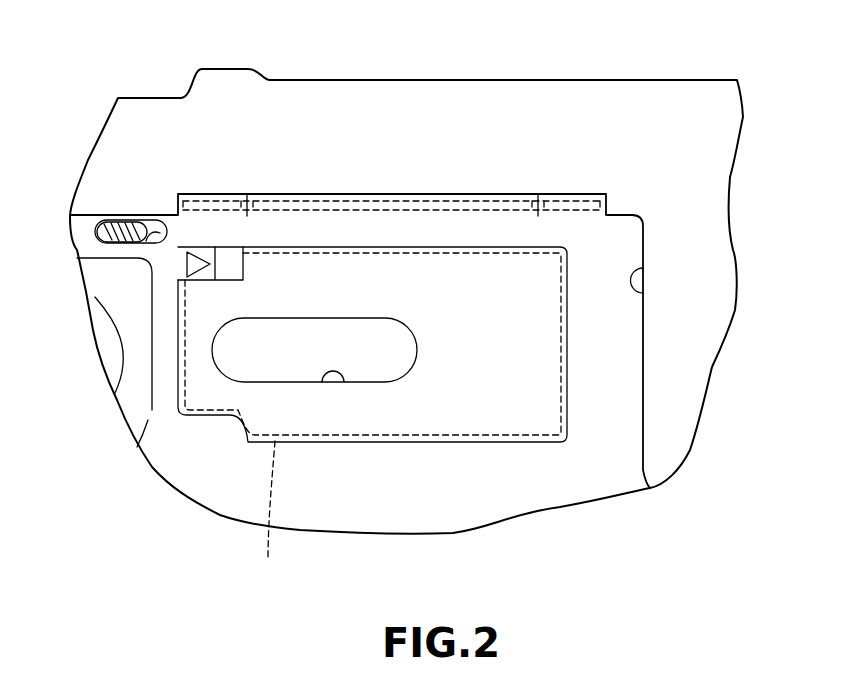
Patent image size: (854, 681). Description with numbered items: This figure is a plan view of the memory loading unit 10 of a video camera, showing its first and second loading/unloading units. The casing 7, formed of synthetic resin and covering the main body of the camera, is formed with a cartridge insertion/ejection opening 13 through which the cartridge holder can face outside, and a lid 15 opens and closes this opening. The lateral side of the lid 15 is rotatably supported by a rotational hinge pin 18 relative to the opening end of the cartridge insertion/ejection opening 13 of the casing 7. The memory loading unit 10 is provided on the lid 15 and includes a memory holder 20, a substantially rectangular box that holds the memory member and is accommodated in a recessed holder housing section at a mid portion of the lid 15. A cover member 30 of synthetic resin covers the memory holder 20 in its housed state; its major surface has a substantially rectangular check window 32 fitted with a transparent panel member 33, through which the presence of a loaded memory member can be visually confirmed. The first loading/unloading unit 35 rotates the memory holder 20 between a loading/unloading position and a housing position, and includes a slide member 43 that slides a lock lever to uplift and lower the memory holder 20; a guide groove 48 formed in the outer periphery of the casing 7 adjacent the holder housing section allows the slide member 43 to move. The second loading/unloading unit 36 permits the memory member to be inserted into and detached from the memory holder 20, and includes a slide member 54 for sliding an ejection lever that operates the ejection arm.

The casing 7 is at (480, 105).
The memory loading unit 10 is at (150, 465).
The cartridge insertion/ejection opening 13 is at (625, 269).
The lid 15 is at (618, 385).
The rotational hinge pin 18 is at (522, 194).
The memory holder 20 is at (264, 514).
The cover member 30 is at (448, 422).
The check window 32 is at (322, 382).
The transparent panel member 33 is at (346, 332).
The first loading/unloading unit 35 is at (130, 210).
The second loading/unloading unit 36 is at (205, 278).
The slide member 43 is at (122, 228).
The guide groove 48 is at (157, 228).
The slide member 54 is at (208, 255).